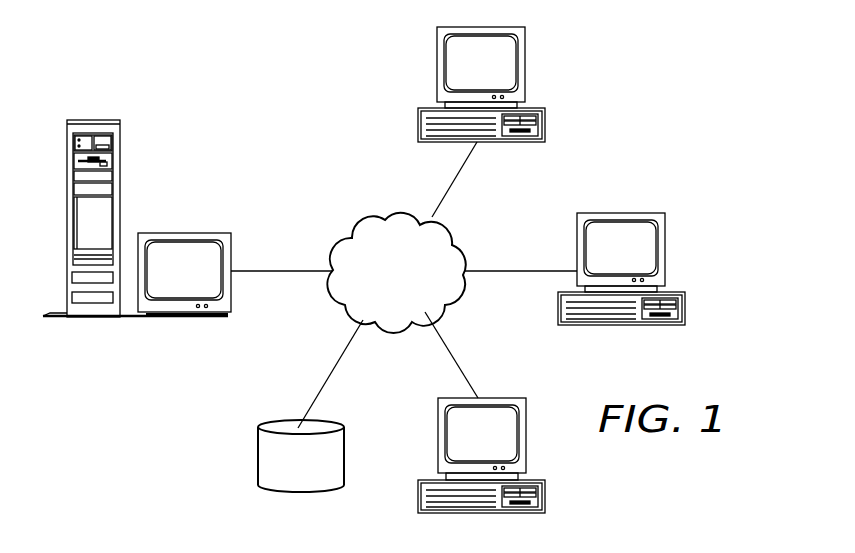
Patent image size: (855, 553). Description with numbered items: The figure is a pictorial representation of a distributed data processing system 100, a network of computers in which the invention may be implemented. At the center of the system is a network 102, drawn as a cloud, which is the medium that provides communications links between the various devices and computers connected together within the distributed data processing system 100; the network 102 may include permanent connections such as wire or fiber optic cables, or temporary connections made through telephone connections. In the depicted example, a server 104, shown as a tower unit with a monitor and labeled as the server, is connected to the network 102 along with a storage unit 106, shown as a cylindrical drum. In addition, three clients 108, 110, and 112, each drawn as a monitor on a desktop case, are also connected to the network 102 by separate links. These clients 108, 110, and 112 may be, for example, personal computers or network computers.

The distributed data processing system 100 is at (253, 70).
The network 102 is at (417, 280).
The server 104 is at (184, 233).
The storage unit 106 is at (258, 455).
The client 108 is at (545, 125).
The client 110 is at (623, 213).
The client 112 is at (545, 497).